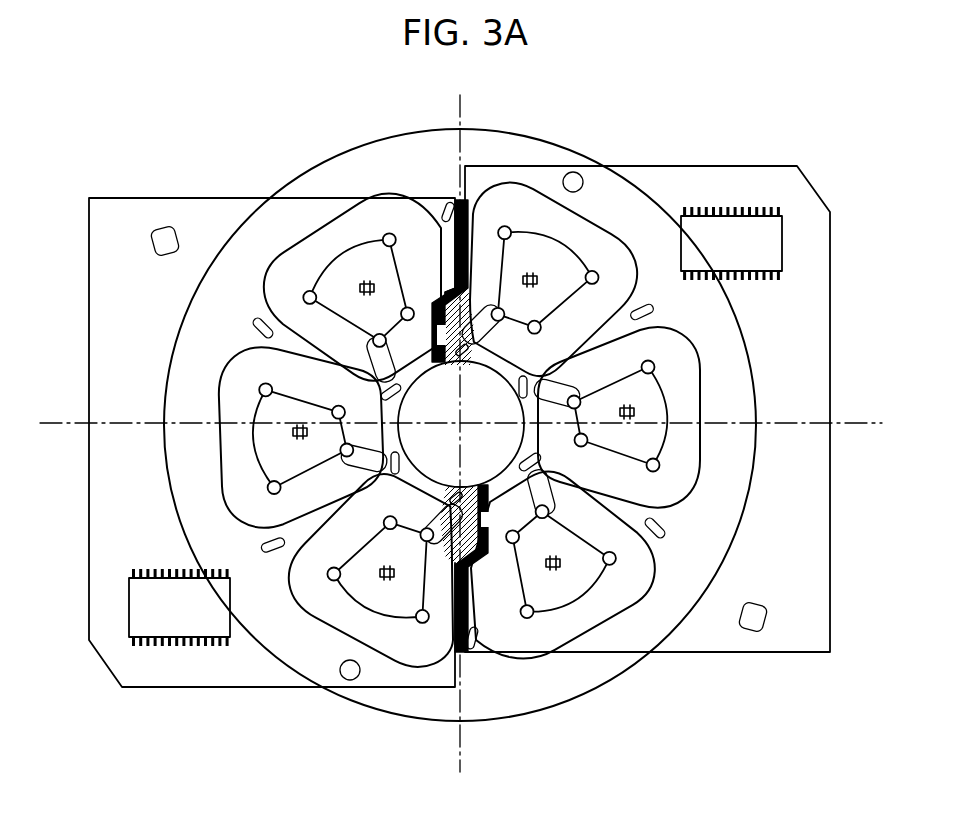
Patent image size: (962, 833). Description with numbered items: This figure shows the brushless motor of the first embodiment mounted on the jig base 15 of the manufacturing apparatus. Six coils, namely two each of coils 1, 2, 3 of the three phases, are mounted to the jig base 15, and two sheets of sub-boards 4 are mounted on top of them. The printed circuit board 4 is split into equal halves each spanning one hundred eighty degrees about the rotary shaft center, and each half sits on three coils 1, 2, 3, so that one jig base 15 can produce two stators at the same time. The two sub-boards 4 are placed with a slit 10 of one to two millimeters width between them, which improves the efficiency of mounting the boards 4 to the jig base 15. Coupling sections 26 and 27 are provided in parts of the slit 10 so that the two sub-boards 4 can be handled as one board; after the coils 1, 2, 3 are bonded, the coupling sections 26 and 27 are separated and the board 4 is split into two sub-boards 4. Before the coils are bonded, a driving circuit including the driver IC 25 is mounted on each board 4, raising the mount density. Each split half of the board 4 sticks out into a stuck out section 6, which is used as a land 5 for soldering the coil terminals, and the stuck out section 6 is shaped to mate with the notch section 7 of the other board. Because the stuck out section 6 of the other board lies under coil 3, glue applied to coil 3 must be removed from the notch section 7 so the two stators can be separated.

The coil 1 is at (567, 240).
The coil 2 is at (682, 403).
The coil 3 is at (337, 250).
The sub-board 4 is at (150, 318).
The land 5 is at (540, 457).
The stuck out section 6 is at (461, 307).
The notch section 7 is at (443, 290).
The slit 10 is at (462, 197).
The jig base 15 is at (490, 677).
The driver IC 25 is at (743, 240).
The coupling section 26 is at (435, 333).
The coupling section 27 is at (485, 515).